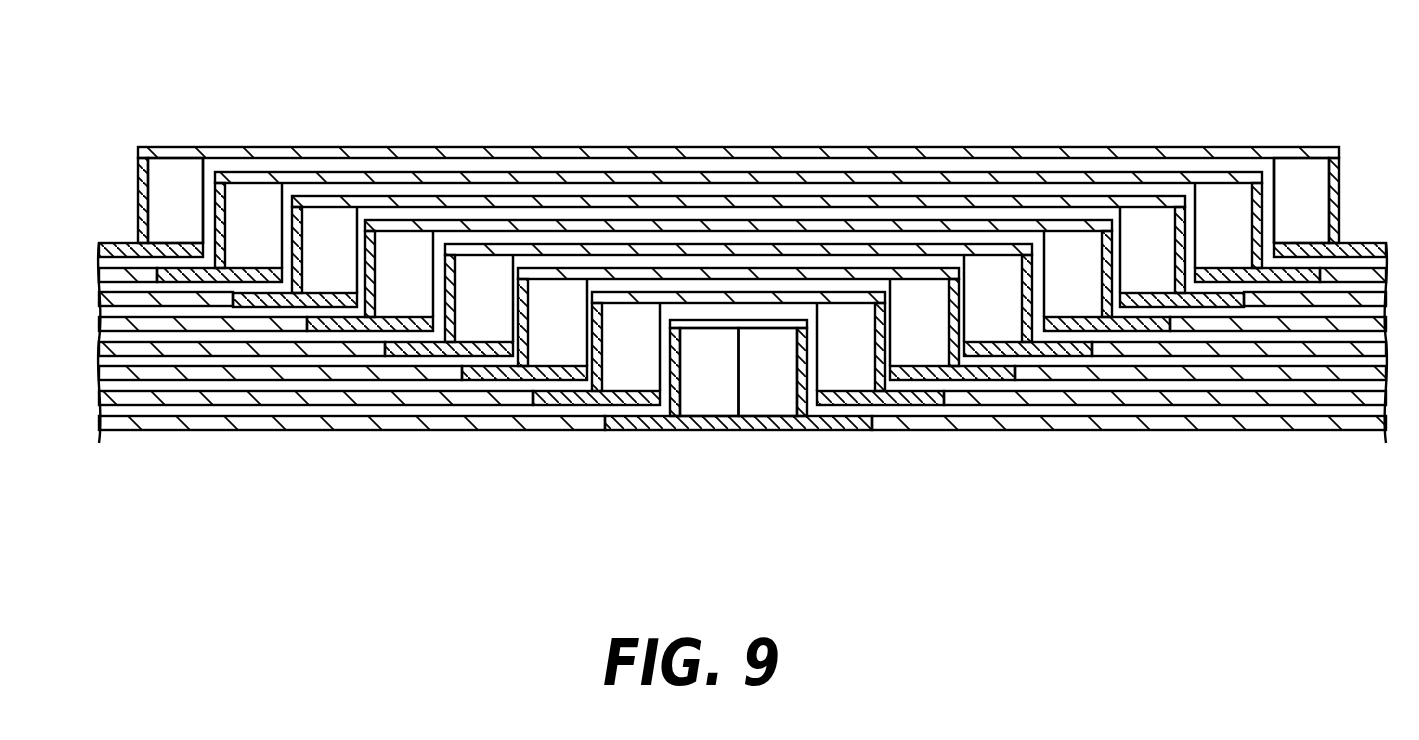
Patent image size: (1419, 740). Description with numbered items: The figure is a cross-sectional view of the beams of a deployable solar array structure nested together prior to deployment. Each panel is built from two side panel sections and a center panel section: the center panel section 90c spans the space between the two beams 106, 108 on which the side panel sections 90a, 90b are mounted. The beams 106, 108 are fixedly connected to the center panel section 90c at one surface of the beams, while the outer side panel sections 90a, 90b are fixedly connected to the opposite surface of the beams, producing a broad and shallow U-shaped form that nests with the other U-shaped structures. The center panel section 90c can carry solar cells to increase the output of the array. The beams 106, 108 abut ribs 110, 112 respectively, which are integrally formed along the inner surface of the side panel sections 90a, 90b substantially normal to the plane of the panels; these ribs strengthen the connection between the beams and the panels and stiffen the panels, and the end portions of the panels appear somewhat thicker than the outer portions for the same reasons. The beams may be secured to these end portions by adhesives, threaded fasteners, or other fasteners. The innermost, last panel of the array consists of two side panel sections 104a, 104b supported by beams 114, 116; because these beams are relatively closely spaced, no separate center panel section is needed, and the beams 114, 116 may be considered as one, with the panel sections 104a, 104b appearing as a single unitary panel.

The side panel section 90a is at (112, 243).
The side panel section 90b is at (1365, 243).
The center panel section 90c is at (687, 147).
The side panel section 104a is at (370, 431).
The side panel section 104b is at (1107, 431).
The beam 106 is at (173, 193).
The beam 108 is at (1292, 180).
The rib 110 is at (138, 188).
The rib 112 is at (1339, 183).
The beam 114 is at (703, 388).
The beam 116 is at (768, 388).